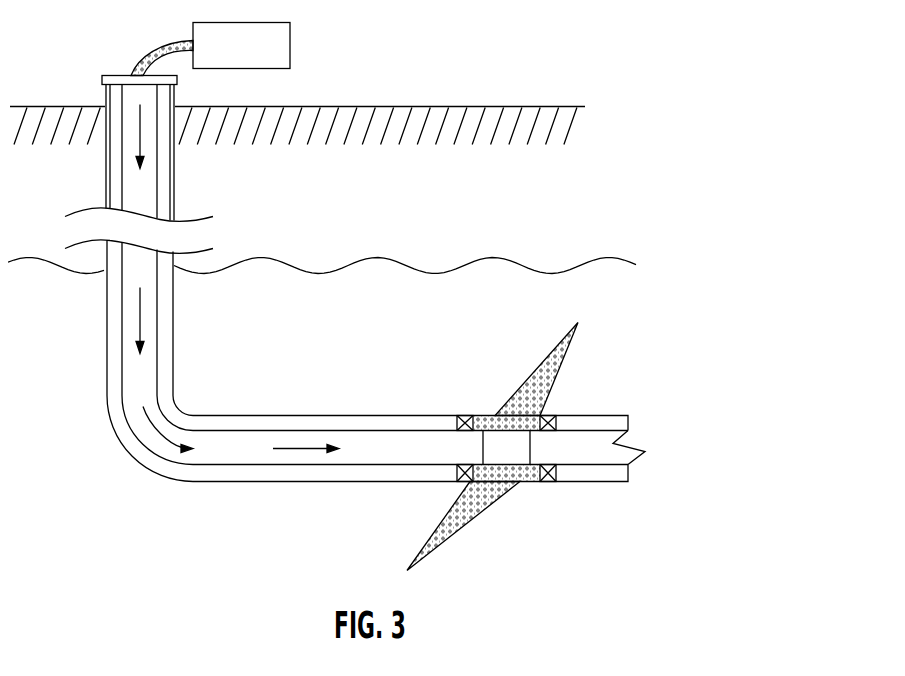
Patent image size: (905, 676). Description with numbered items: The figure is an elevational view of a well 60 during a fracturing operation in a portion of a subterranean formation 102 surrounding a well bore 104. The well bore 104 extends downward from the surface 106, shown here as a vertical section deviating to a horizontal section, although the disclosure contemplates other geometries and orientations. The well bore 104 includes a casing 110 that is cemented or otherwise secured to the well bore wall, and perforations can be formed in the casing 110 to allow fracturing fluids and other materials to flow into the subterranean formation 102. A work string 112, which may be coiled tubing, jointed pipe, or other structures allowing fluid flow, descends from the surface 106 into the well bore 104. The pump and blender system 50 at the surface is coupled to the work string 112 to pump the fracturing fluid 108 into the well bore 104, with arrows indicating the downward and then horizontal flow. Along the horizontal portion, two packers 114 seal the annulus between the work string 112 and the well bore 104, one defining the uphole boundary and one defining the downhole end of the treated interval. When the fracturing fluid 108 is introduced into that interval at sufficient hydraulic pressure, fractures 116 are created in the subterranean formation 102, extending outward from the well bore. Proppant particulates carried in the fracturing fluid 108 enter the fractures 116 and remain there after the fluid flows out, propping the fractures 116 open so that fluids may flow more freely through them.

The pump and blender system 50 is at (255, 61).
The well 60 is at (104, 492).
The subterranean formation 102 is at (390, 302).
The well bore 104 is at (118, 177).
The surface 106 is at (440, 109).
The fracturing fluid 108 is at (176, 43).
The casing 110 is at (172, 203).
The work string 112 is at (122, 355).
The packers 114 is at (466, 417).
The fractures 116 is at (470, 370).